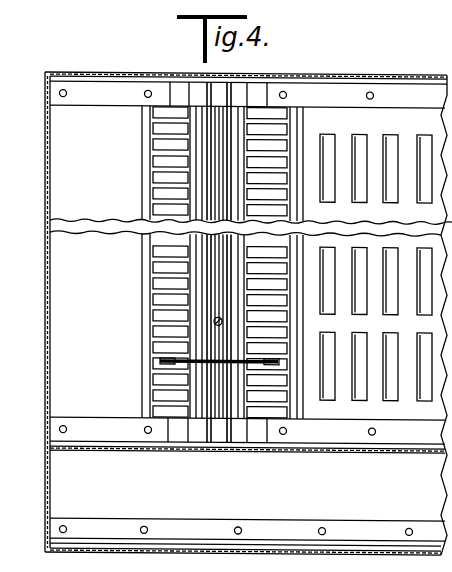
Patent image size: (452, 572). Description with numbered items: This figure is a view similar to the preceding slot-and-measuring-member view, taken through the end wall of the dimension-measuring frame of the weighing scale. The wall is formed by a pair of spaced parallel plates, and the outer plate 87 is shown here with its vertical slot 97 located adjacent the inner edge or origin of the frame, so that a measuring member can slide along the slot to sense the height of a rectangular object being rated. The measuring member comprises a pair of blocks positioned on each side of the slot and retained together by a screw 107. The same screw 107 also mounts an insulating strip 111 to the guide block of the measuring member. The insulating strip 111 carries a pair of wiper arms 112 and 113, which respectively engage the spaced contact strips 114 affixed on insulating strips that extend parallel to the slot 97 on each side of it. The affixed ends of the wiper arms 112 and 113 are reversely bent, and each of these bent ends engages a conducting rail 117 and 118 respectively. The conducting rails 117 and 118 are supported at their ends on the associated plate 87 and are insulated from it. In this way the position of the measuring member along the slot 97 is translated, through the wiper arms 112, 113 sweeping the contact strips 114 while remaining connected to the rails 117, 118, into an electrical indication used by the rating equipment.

The plate 87 is at (355, 450).
The vertical slot 97 is at (218, 137).
The screw 107 is at (213, 318).
The insulating strip 111 is at (202, 333).
The wiper arm 112 is at (162, 359).
The wiper arm 113 is at (265, 367).
The contact strips 114 is at (162, 250).
The conducting rail 117 is at (209, 178).
The conducting rail 118 is at (227, 163).